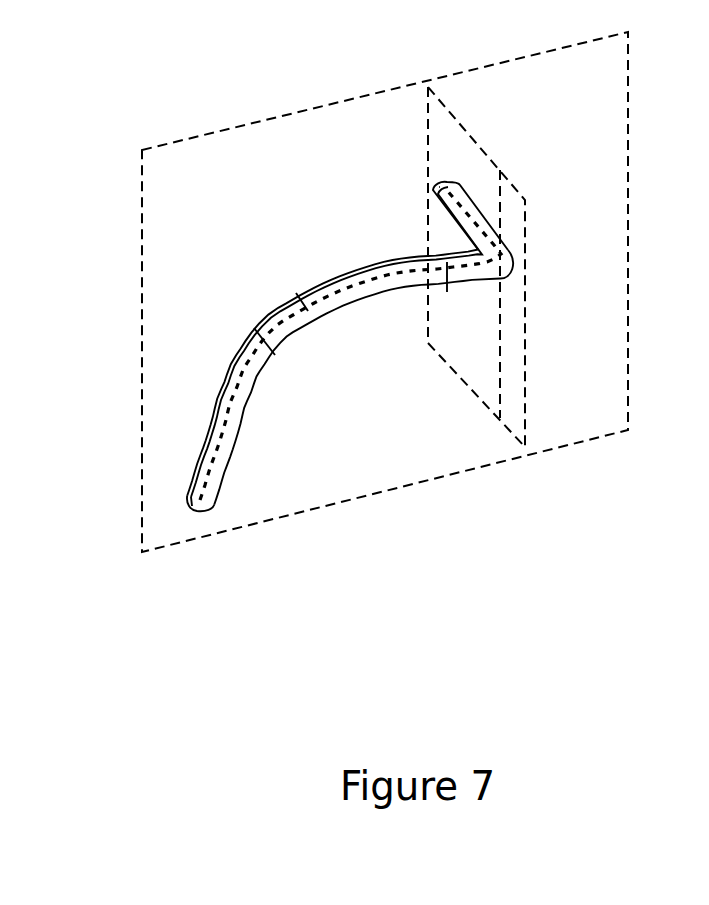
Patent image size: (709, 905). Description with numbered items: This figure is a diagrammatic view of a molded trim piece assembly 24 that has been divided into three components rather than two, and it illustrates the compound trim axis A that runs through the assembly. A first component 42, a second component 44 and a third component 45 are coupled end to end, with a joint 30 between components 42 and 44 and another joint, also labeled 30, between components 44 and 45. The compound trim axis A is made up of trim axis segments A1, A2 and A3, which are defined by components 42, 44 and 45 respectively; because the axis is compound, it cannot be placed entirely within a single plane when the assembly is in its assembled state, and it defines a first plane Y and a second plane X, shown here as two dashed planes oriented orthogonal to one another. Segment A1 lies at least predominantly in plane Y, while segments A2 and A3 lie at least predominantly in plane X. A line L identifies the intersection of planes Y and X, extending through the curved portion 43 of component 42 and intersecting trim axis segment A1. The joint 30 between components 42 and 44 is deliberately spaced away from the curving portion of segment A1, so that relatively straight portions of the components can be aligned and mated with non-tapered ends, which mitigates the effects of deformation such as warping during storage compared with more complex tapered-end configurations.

The trim piece assembly 24 is at (378, 319).
The joint 30 is at (378, 319).
The component 42 is at (461, 184).
The curved portion 43 is at (511, 256).
The component 44 is at (367, 266).
The third component 45 is at (227, 468).
The compound trim axis A is at (333, 296).
The trim axis segment A1 is at (440, 187).
The trim axis segment A2 is at (303, 303).
The trim axis segment A3 is at (274, 371).
The line L is at (500, 378).
The second plane X is at (628, 376).
The first plane Y is at (443, 103).